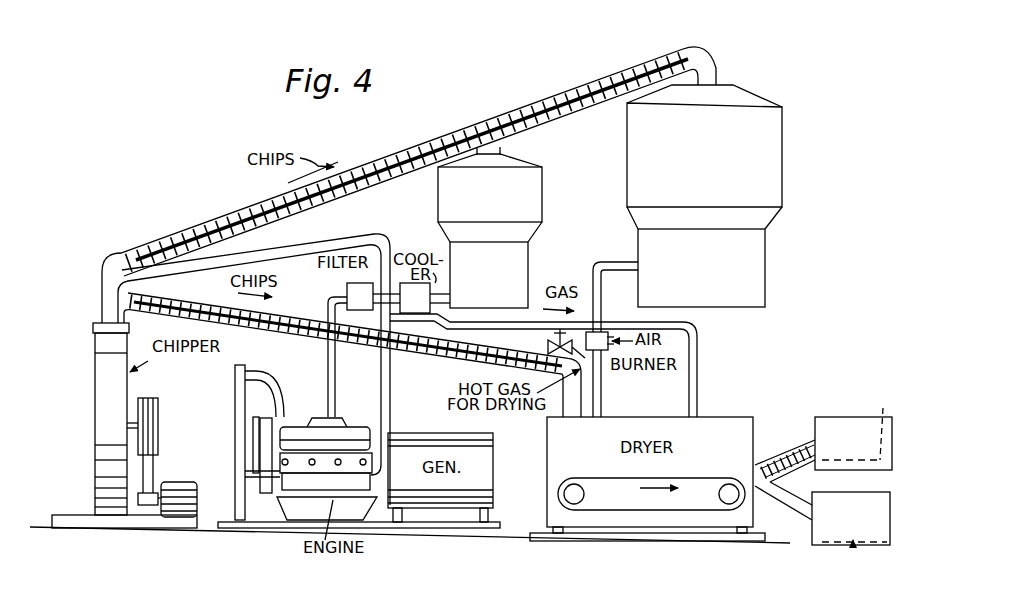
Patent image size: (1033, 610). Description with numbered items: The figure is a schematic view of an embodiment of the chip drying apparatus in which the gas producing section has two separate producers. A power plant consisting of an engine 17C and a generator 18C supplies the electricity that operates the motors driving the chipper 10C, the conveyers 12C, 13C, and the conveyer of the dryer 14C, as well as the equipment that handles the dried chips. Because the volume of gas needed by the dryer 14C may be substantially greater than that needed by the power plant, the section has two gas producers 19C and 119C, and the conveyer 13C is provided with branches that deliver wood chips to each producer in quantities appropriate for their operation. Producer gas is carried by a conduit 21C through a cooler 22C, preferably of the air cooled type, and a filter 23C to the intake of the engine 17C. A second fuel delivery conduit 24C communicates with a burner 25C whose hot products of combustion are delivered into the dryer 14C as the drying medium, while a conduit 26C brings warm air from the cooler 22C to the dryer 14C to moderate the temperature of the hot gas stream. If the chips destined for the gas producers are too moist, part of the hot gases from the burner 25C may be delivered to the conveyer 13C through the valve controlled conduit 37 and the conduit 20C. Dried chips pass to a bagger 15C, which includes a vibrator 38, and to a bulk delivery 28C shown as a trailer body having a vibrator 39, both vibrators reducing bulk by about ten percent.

The chipper 10C is at (94, 387).
The conveyer 12C is at (208, 298).
The conveyer 13C is at (203, 221).
The dryer 14C is at (632, 516).
The bagger 15C is at (824, 549).
The engine 17C is at (300, 494).
The generator 18C is at (443, 503).
The gas producer 19C is at (534, 198).
The gas producer 119C is at (767, 185).
The conduit 20C is at (390, 380).
The conduit 21C is at (327, 369).
The cooler 22C is at (431, 296).
The filter 23C is at (347, 286).
The fuel delivery conduit 24C is at (594, 263).
The burner 25C is at (604, 356).
The conduit 26C is at (698, 384).
The bulk delivery 28C is at (838, 414).
The valve controlled conduit 37 is at (514, 331).
The vibrator 38 is at (853, 548).
The vibrator 39 is at (863, 425).